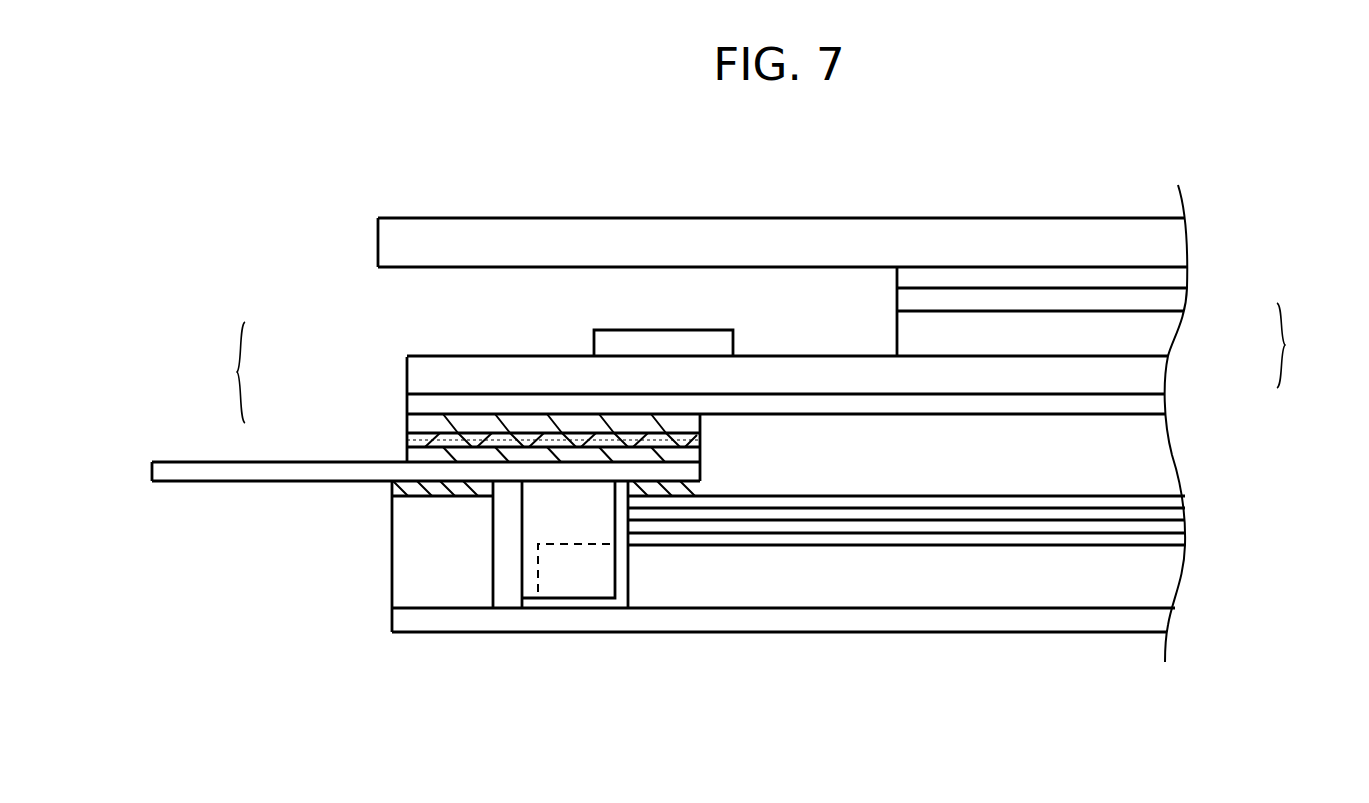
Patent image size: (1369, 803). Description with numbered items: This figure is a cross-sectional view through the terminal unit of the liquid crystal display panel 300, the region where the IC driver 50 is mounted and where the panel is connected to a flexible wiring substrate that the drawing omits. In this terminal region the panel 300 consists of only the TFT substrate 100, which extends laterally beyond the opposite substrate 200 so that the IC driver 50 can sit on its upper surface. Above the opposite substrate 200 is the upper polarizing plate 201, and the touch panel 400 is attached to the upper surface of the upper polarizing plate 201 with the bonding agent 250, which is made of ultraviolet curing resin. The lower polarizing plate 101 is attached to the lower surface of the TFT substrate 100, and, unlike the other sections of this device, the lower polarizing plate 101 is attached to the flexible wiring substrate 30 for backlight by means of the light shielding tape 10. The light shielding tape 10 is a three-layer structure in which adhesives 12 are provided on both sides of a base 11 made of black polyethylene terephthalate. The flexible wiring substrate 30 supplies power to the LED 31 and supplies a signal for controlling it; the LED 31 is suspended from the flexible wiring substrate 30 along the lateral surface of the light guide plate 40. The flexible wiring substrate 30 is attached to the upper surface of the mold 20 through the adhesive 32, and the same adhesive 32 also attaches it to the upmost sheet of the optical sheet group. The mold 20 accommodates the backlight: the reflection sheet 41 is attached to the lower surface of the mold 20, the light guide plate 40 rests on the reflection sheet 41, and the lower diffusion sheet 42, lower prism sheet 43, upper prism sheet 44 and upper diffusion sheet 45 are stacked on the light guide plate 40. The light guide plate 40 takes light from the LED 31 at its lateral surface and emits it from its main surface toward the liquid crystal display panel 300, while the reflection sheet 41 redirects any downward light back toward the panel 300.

The light shielding tape 10 is at (444, 401).
The base 11 is at (407, 444).
The adhesives 12 is at (407, 422).
The mold 20 is at (403, 563).
The flexible wiring substrate for backlight 30 is at (232, 472).
The LED 31 is at (577, 585).
The adhesive for the flexible wiring substrate 32 is at (395, 488).
The light guide plate 40 is at (762, 588).
The reflection sheet 41 is at (667, 618).
The lower diffusion sheet 42 is at (863, 540).
The lower prism sheet 43 is at (937, 528).
The upper prism sheet 44 is at (1013, 515).
The upper diffusion sheet 45 is at (1085, 505).
The IC driver 50 is at (663, 340).
The TFT substrate 100 is at (1157, 375).
The lower polarizing plate 101 is at (1157, 407).
The opposite substrate 200 is at (1157, 330).
The upper polarizing plate 201 is at (1178, 302).
The bonding agent 250 is at (1063, 282).
The liquid crystal display panel 300 is at (1312, 345).
The touch panel 400 is at (878, 242).